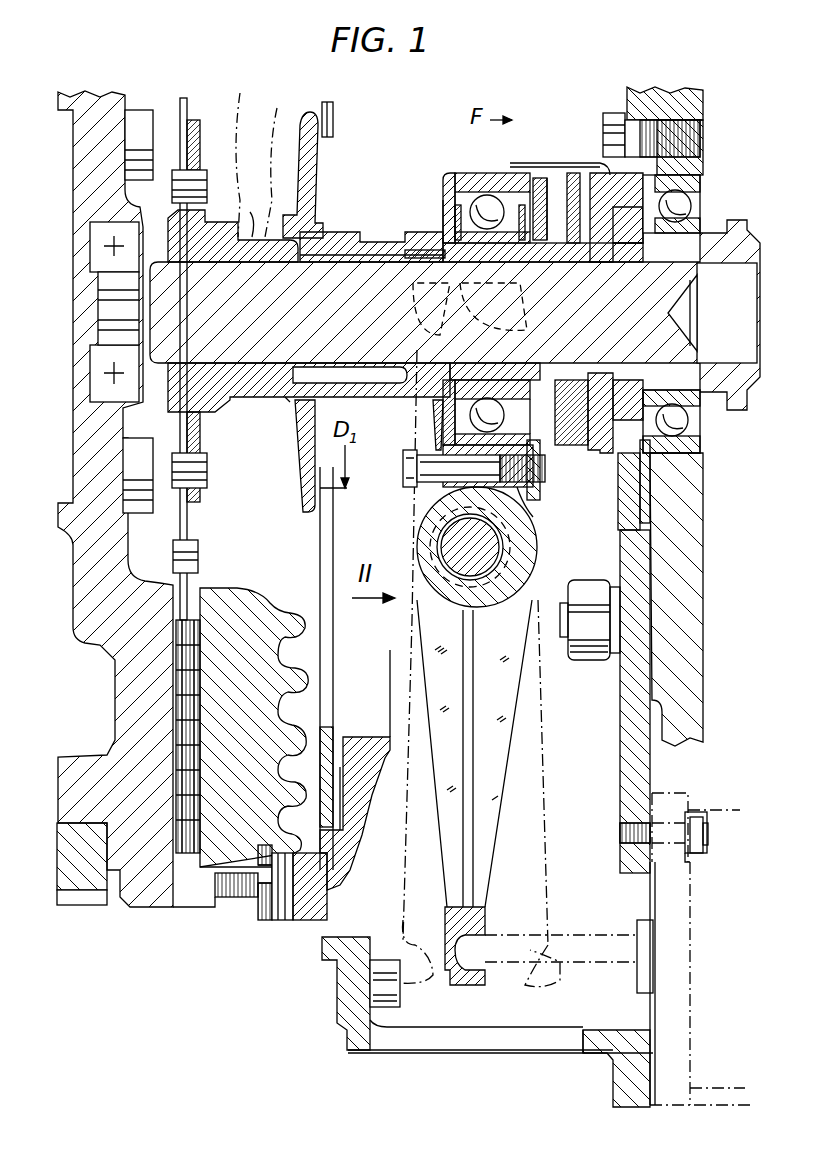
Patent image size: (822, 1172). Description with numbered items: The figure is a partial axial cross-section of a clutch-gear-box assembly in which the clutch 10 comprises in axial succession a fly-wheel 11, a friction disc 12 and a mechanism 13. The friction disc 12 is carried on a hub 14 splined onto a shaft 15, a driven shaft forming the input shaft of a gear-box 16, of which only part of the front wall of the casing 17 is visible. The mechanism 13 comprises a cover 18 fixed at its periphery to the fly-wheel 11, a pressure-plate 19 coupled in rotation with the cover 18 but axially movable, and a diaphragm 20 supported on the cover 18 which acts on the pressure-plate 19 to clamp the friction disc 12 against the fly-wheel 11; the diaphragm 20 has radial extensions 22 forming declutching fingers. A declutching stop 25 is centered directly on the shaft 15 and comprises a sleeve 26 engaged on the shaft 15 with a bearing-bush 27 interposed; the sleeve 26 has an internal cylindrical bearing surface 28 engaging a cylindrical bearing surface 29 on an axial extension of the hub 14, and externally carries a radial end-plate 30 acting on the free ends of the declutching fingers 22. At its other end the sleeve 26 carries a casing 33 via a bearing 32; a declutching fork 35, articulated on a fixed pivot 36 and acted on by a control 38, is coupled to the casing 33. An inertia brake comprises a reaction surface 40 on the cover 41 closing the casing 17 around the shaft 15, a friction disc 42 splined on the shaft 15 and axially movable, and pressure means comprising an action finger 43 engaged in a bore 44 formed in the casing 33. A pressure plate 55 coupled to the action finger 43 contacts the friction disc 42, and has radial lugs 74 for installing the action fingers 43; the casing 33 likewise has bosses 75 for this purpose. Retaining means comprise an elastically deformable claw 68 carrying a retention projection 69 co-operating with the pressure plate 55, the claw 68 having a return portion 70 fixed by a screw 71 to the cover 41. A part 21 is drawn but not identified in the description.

The clutch 10 is at (65, 935).
The fly-wheel 11 is at (130, 905).
The friction disc 12 is at (187, 865).
The mechanism 13 is at (262, 922).
The hub 14 is at (215, 395).
The shaft 15 is at (265, 345).
The gear-box 16 is at (652, 745).
The casing 17 is at (648, 687).
The cover 18 is at (312, 922).
The pressure-plate 19 is at (222, 910).
The diaphragm 20 is at (400, 668).
The ring 21 is at (338, 737).
The radial extensions 22 is at (335, 605).
The declutching stop 25 is at (440, 177).
The sleeve 26 is at (375, 238).
The bearing-bush 27 is at (420, 246).
The cylindrical bearing surface 28 is at (337, 240).
The cylindrical bearing surface 29 is at (245, 235).
The radial end-plate 30 is at (300, 460).
The bearing 32 is at (465, 183).
The casing 33 is at (440, 195).
The declutching fork 35 is at (432, 775).
The fixed pivot 36 is at (458, 565).
The control 38 is at (575, 975).
The reaction surface 40 is at (582, 440).
The cover 41 is at (617, 503).
The friction disc 42 is at (555, 395).
The action finger 43 is at (425, 470).
The bore 44 is at (520, 452).
The pressure plate 55 is at (550, 243).
The claw 68 is at (562, 163).
The retention projection 69 is at (541, 177).
The return portion 70 is at (620, 112).
The screw 71 is at (597, 112).
The radial lugs 74 is at (540, 480).
The bosses 75 is at (535, 503).